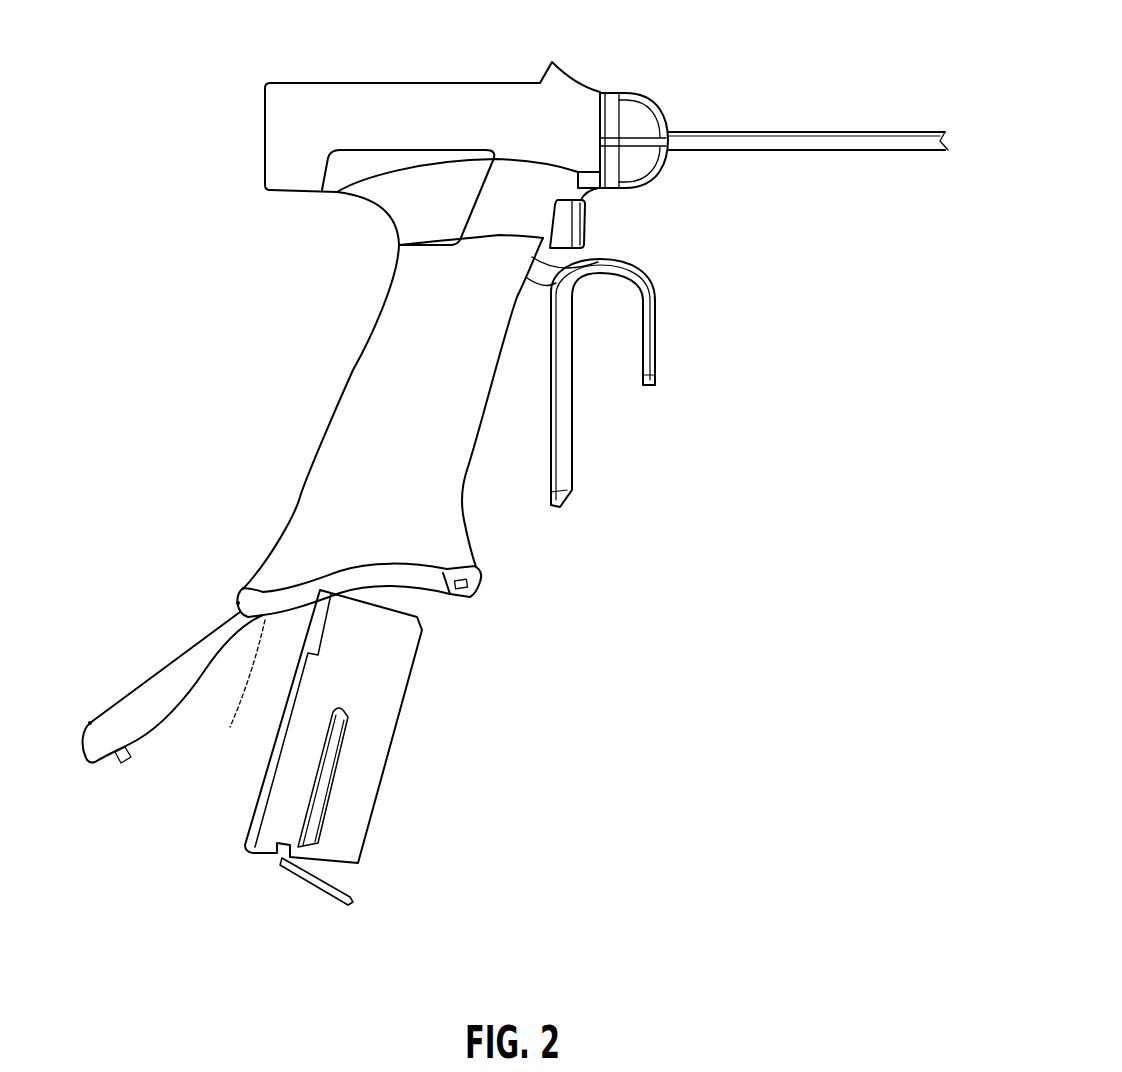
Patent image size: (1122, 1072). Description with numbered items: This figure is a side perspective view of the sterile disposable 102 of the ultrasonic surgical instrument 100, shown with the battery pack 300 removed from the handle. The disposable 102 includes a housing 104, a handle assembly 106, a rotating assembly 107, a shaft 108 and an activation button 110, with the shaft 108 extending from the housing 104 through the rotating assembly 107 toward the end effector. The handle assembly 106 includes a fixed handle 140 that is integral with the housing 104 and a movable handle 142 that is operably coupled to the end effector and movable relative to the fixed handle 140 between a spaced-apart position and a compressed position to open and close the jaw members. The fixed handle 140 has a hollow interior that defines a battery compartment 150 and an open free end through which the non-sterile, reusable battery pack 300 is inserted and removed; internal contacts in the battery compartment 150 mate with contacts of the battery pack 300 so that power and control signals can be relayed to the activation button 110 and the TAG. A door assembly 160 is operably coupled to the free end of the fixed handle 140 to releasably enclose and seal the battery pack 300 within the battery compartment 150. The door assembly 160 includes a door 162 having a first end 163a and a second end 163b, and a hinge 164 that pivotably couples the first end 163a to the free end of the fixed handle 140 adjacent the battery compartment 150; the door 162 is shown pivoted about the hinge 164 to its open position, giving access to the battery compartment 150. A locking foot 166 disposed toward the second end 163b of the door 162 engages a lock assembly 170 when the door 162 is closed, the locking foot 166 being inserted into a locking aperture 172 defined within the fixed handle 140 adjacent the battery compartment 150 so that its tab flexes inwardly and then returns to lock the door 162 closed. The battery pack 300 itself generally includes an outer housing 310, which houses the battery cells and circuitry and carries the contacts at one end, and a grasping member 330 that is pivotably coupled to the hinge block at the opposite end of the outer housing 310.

The ultrasonic surgical instrument 100 is at (837, 53).
The sterile disposable 102 is at (320, 296).
The housing 104 is at (337, 82).
The handle assembly 106 is at (622, 595).
The rotating assembly 107 is at (632, 93).
The shaft 108 is at (865, 132).
The activation button 110 is at (585, 214).
The fixed handle 140 is at (350, 380).
The movable handle 142 is at (575, 438).
The battery compartment 150 is at (425, 580).
The door assembly 160 is at (171, 738).
The door 162 is at (175, 648).
The first end 163a is at (233, 602).
The second end 163b is at (90, 723).
The hinge 164 is at (263, 627).
The locking foot 166 is at (123, 764).
The lock assembly 170 is at (488, 590).
The locking aperture 172 is at (472, 575).
The battery pack 300 is at (423, 738).
The outer housing 310 is at (382, 795).
The grasping member 330 is at (350, 907).